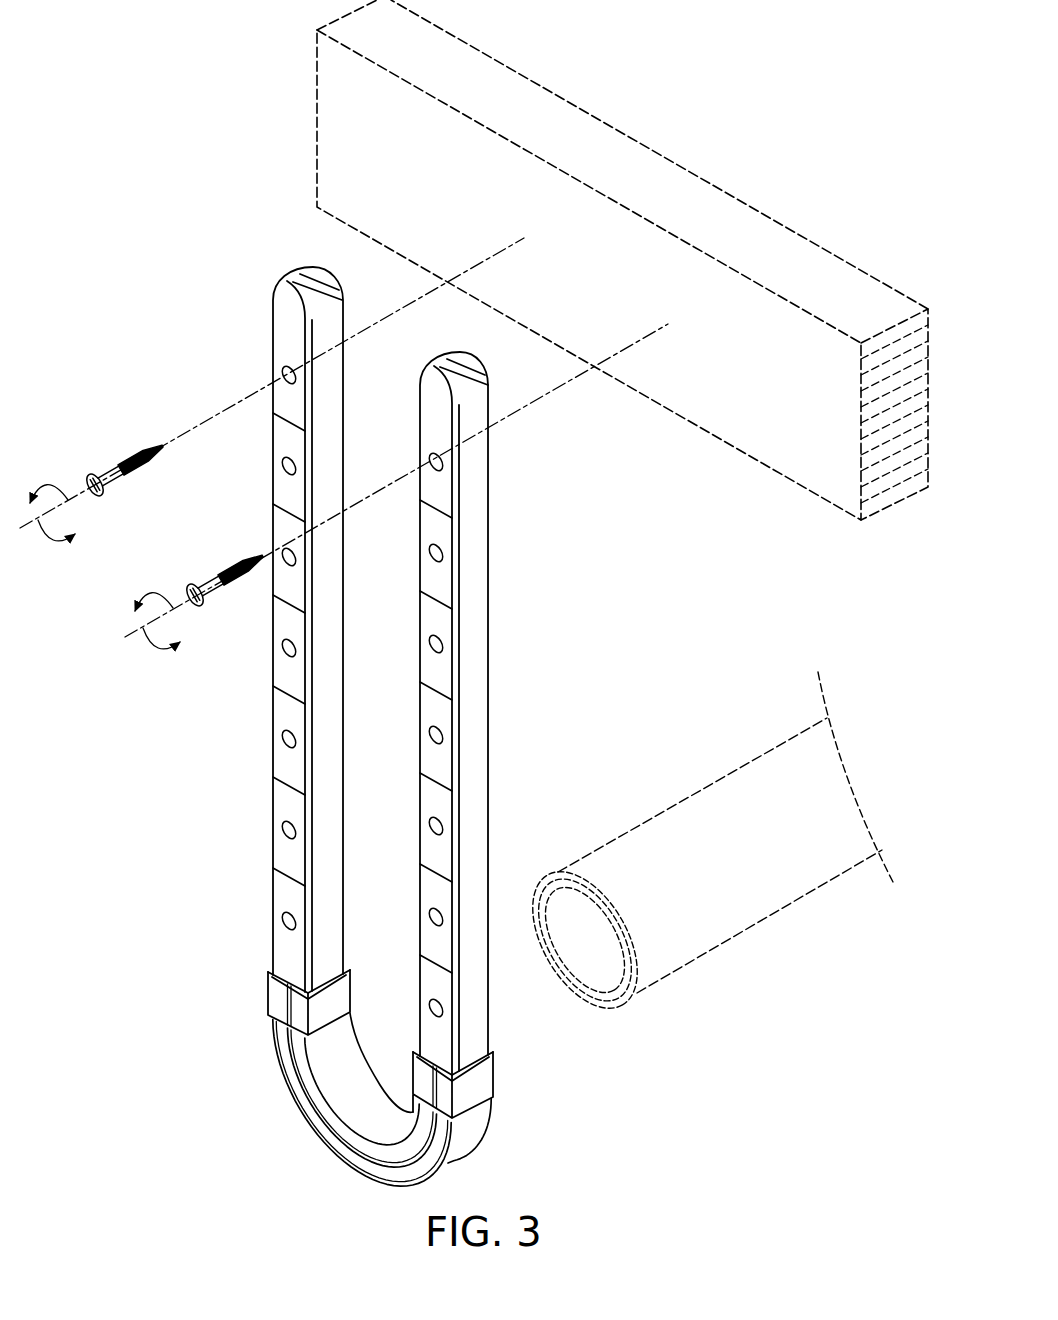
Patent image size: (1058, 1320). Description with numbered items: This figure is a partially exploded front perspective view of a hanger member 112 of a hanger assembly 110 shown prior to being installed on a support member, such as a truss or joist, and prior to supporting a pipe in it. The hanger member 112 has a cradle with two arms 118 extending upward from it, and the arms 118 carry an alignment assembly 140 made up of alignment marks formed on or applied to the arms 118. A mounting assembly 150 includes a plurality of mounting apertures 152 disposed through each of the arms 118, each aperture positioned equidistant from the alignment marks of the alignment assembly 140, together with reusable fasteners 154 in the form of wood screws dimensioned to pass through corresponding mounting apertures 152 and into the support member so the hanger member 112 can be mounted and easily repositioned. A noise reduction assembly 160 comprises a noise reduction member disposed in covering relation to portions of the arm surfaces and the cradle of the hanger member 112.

The hanger assembly 110 is at (582, 591).
The hanger member 112 is at (497, 1018).
The arm 118 is at (343, 688).
The alignment assembly 140 is at (409, 777).
The mounting assembly 150 is at (232, 721).
The mounting aperture 152 is at (283, 368).
The fastener 154 is at (132, 452).
The noise reduction assembly 160 is at (290, 1169).